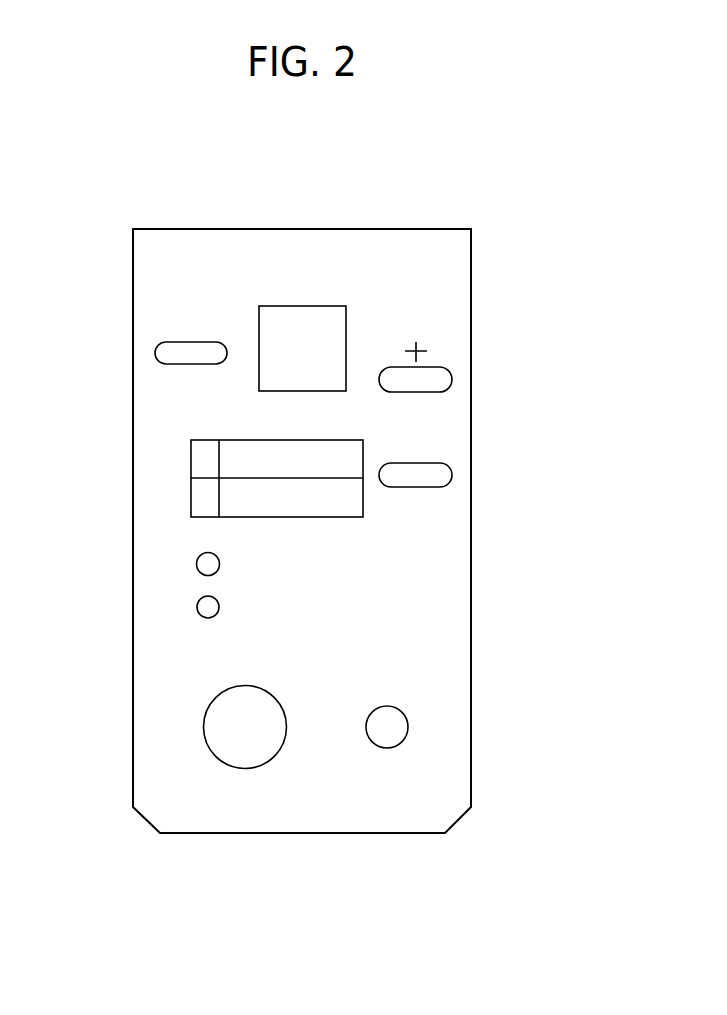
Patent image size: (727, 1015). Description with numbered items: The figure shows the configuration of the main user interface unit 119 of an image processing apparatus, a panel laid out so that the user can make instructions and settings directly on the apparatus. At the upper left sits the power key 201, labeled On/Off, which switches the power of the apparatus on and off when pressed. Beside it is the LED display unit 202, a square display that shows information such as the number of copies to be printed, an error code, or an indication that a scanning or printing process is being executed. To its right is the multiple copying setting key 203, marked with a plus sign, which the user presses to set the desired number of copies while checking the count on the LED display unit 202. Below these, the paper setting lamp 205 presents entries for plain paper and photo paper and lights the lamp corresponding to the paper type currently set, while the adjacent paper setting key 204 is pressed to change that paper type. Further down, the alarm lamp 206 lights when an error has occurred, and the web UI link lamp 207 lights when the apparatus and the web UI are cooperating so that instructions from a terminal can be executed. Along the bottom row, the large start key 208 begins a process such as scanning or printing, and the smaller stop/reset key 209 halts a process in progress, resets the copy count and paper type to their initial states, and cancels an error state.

The user interface unit 119 is at (305, 833).
The power key 201 is at (155, 353).
The LED display unit 202 is at (307, 306).
The multiple copying setting key 203 is at (452, 379).
The paper setting key 204 is at (452, 475).
The paper setting lamp 205 is at (208, 517).
The alarm lamp 206 is at (197, 563).
The web UI link lamp 207 is at (197, 607).
The start key 208 is at (204, 733).
The stop/reset key 209 is at (408, 727).